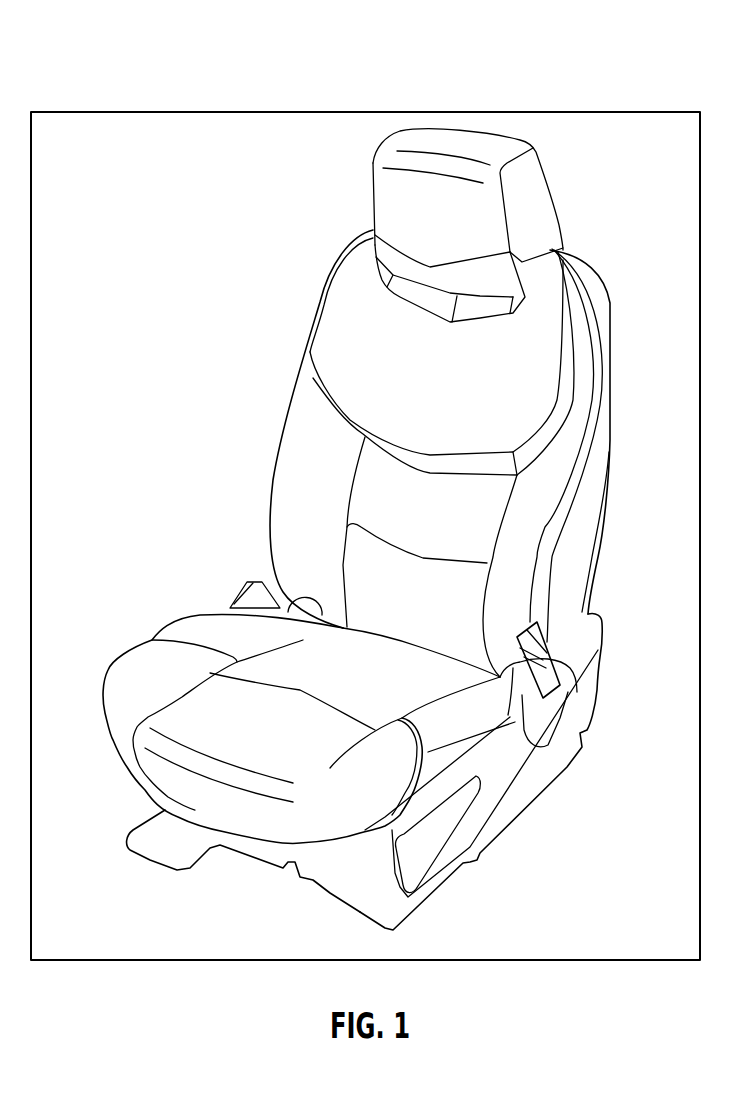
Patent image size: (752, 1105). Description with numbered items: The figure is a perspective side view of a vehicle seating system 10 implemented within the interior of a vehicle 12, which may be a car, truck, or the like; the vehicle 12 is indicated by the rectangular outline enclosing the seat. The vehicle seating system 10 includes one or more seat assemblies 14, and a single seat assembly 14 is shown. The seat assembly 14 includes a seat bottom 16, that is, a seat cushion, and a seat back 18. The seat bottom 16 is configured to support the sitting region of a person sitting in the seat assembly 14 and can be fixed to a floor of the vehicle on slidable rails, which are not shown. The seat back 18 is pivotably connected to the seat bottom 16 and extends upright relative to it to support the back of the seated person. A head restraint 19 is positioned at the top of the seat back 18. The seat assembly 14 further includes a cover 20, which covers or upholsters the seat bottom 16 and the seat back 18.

The vehicle seating system 10 is at (644, 52).
The vehicle 12 is at (182, 112).
The seat assembly 14 is at (540, 158).
The seat bottom 16 is at (270, 828).
The seat back 18 is at (593, 420).
The head restraint 19 is at (557, 214).
The cover 20 is at (577, 325).